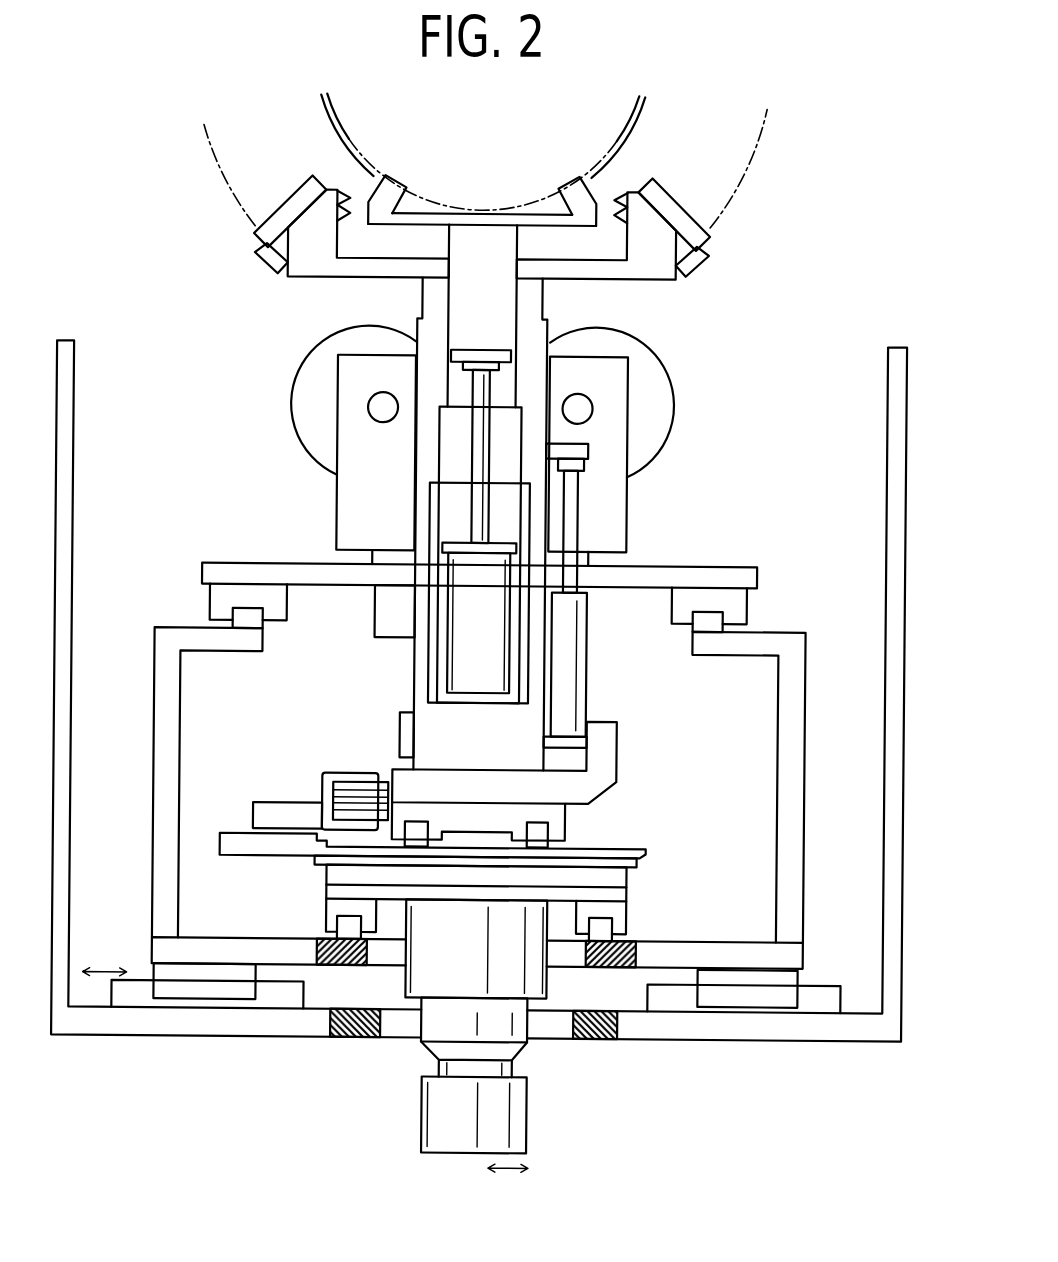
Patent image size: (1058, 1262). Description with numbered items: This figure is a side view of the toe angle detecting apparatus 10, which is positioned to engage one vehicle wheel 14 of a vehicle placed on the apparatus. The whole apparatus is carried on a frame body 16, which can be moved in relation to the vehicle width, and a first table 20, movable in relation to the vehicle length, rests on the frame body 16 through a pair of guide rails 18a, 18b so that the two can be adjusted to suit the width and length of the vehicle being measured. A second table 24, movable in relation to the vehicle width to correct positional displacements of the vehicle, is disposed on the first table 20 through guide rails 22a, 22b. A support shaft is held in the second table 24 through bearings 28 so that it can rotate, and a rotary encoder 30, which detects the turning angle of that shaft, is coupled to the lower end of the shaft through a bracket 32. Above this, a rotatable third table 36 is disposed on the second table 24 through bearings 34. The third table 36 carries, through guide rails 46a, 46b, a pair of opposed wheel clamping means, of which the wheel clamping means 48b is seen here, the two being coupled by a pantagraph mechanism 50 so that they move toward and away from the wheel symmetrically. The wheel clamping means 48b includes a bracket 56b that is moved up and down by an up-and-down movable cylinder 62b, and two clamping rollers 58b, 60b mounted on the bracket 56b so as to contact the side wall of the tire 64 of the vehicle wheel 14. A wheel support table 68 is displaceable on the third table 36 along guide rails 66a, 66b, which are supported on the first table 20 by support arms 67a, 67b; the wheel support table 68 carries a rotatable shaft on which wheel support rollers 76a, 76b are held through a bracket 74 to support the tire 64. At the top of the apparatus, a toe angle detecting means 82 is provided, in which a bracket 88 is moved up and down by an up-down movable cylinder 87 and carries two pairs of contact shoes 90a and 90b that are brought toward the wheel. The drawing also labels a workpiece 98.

The toe angle detecting apparatus 10 is at (167, 318).
The vehicle wheel 14 is at (703, 132).
The frame body 16 is at (890, 610).
The guide rail 18a is at (290, 1000).
The guide rail 18b is at (820, 1018).
The first table 20 is at (778, 955).
The guide rail 22a is at (345, 927).
The guide rail 22b is at (606, 927).
The second table 24 is at (335, 888).
The bearings 28 is at (420, 975).
The rotary encoder 30 is at (500, 1112).
The bracket 32 is at (425, 1024).
The bearings 34 is at (335, 862).
The third table 36 is at (647, 852).
The guide rail 46a is at (418, 830).
The guide rail 46b is at (548, 833).
The wheel clamping means 48b is at (295, 290).
The pantagraph mechanism 50 is at (362, 783).
The bracket 56b is at (664, 223).
The clamping roller 58b is at (270, 260).
The clamping roller 60b is at (703, 256).
The up-and-down movable cylinder 62b is at (574, 670).
The tire 64 is at (213, 172).
The guide rail 66a is at (245, 620).
The guide rail 66b is at (715, 622).
The support arm 67a is at (160, 770).
The support arm 67b is at (794, 782).
The wheel support table 68 is at (722, 577).
The bracket 74 is at (632, 497).
The wheel support roller 76a is at (317, 413).
The wheel support roller 76b is at (652, 412).
The toe angle detecting means 82 is at (525, 333).
The up-down movable cylinder 87 is at (480, 690).
The bracket 88 is at (484, 245).
The contact shoes 90a is at (394, 186).
The contact shoes 90b is at (571, 193).
The workpiece 98 is at (354, 163).